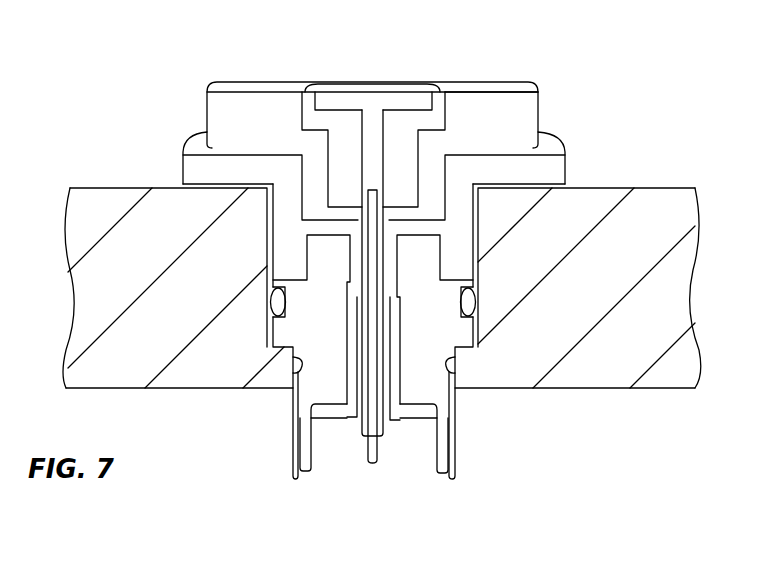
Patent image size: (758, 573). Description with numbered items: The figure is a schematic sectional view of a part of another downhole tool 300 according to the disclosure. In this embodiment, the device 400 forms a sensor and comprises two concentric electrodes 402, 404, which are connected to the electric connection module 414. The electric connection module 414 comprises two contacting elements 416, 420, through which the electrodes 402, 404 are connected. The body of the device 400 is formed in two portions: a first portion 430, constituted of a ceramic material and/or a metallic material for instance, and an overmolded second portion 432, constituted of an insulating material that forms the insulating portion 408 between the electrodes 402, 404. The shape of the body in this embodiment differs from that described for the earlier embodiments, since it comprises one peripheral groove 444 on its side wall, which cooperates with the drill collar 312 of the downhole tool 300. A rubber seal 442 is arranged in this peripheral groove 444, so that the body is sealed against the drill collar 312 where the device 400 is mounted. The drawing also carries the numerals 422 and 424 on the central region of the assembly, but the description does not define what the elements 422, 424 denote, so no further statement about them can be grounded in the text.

The downhole tool 300 is at (585, 79).
The drill collar 312 is at (581, 301).
The device 400 is at (223, 77).
The concentric electrode 402 is at (376, 96).
The concentric electrode 404 is at (461, 84).
The insulating portion 408 is at (306, 90).
The electric connection module 414 is at (385, 345).
The contacting element 416 is at (378, 460).
The contacting element 420 is at (353, 429).
The outer tube 422 is at (363, 432).
The right retention lip 424 is at (397, 412).
The first portion 430 is at (462, 330).
The second portion 432 is at (457, 246).
The rubber seal 442 is at (268, 306).
The peripheral groove 444 is at (294, 367).